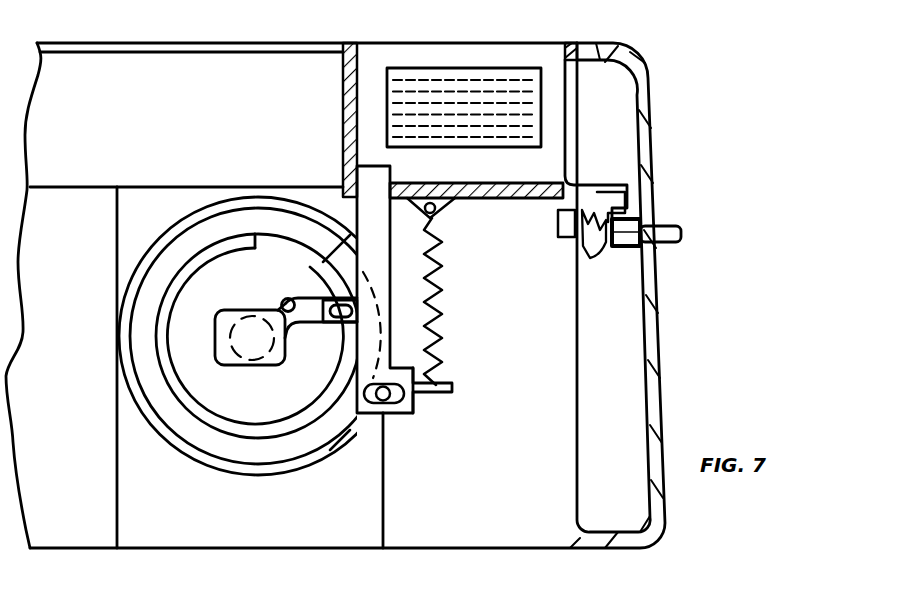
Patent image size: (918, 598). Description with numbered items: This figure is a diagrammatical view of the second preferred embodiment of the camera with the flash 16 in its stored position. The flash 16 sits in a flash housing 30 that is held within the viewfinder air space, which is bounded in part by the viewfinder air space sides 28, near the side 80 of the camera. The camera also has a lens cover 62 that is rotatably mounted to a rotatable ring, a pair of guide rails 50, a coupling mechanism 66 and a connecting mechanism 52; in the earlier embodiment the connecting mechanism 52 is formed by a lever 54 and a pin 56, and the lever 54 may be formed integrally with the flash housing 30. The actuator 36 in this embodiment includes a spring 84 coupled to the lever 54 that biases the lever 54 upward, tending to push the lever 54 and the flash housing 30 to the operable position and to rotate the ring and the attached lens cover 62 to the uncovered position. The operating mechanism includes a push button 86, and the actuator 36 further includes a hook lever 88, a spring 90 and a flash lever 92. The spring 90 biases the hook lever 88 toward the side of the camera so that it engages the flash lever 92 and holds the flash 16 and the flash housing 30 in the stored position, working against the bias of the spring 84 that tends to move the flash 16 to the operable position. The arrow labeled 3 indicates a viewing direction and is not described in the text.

The view direction arrow 3 is at (700, 237).
The flash 16 is at (446, 78).
The viewfinder air space sides 28 is at (350, 43).
The flash housing 30 is at (495, 50).
The actuator 36 is at (496, 341).
The guide rails 50 is at (245, 478).
The connecting mechanism 52 is at (492, 414).
The lever 54 is at (416, 402).
The pin 56 is at (398, 410).
The lens cover 62 is at (233, 310).
The coupling mechanism 66 is at (332, 345).
The side of the camera 80 is at (658, 304).
The spring 84 is at (441, 269).
The push button 86 is at (655, 226).
The hook lever 88 is at (598, 244).
The spring 90 is at (559, 262).
The flash lever 92 is at (628, 194).